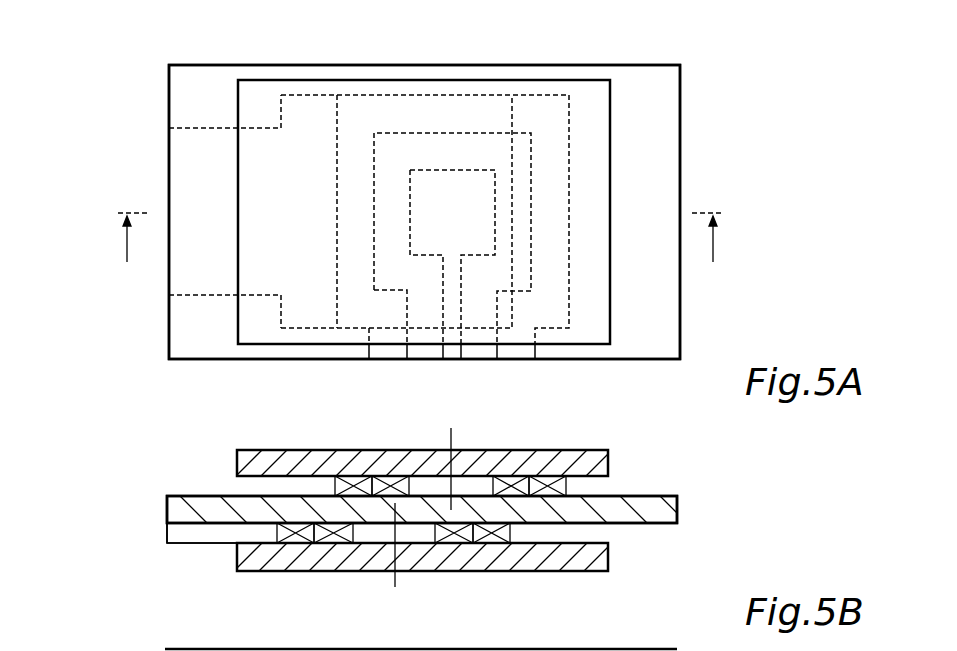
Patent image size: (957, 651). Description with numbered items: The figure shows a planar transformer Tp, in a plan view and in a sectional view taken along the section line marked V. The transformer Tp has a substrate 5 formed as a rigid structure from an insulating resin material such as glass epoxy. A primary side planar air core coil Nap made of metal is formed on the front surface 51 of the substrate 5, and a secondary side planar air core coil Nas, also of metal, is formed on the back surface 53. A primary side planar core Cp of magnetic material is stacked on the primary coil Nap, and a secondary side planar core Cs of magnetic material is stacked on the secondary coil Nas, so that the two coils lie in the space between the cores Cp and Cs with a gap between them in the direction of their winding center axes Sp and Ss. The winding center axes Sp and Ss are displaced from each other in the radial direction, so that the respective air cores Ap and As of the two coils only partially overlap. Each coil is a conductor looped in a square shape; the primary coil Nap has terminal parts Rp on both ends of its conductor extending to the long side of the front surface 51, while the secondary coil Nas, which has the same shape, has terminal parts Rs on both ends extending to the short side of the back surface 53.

In FIG. 5A, the substrate 5 is at (681, 84).
In FIG. 5B, the substrate 5 is at (668, 509).
In FIG. 5A, the front surface 51 is at (663, 141).
In FIG. 5B, the front surface 51 is at (645, 494).
In FIG. 5B, the back surface 53 is at (655, 525).
In FIG. 5A, the primary side planar core Cp is at (594, 333).
In FIG. 5B, the primary side planar core Cp is at (268, 455).
In FIG. 5B, the secondary side planar core Cs is at (271, 560).
In FIG. 5A, the secondary side planar air core coil Nas is at (312, 108).
In FIG. 5B, the secondary side planar air core coil Nas is at (568, 480).
In FIG. 5B, the primary side planar air core coil Nap is at (583, 649).
In FIG. 5A, the air core Ap is at (452, 176).
In FIG. 5B, the air core Ap is at (478, 478).
In FIG. 5B, the air core As is at (364, 532).
In FIG. 5A, the terminal parts Rp is at (389, 349).
In FIG. 5A, the terminal parts Rs is at (196, 296).
In FIG. 5B, the terminal parts Rs is at (196, 535).
In FIG. 5B, the winding center axis Sp is at (445, 437).
In FIG. 5B, the winding center axis Ss is at (398, 581).
In FIG. 5B, the planar transformer Tp is at (134, 503).
In FIG. 5A, the section line V- V is at (421, 255).